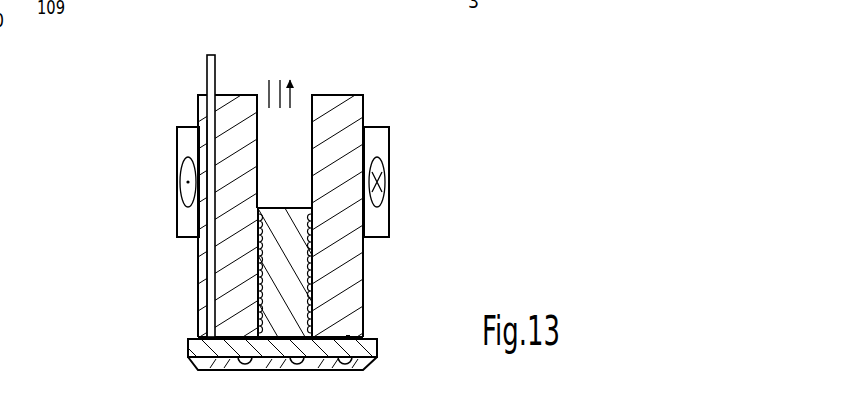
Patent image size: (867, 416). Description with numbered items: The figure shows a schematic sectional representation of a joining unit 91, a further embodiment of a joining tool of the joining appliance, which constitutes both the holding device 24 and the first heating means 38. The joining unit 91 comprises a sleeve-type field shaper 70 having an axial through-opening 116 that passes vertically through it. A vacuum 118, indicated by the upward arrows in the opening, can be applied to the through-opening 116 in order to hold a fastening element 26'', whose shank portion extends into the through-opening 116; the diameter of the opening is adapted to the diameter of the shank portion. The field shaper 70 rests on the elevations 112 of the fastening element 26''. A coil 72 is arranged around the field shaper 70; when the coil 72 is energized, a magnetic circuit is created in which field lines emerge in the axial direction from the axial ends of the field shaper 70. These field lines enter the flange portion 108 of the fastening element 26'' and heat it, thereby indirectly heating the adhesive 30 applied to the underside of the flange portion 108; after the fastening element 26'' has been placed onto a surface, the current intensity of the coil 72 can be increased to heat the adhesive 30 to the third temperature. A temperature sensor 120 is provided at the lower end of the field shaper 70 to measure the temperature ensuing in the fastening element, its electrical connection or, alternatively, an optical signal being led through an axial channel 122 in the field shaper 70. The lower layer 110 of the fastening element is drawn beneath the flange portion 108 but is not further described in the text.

The field shaper 70 is at (328, 115).
The coil 72 is at (387, 180).
The fastening element 26'' is at (375, 272).
The axial through-opening 116 is at (300, 118).
The vacuum 118 is at (270, 92).
The temperature sensor 120 is at (213, 325).
The axial channel 122 is at (213, 285).
The flange portion 108 is at (187, 345).
The lower layer 110 is at (297, 372).
The adhesive 30 is at (228, 363).
The elevations 112 is at (363, 338).
The joining unit 91 is at (421, 110).
The holding device 24 is at (468, 134).
The first heating means 38 is at (468, 134).